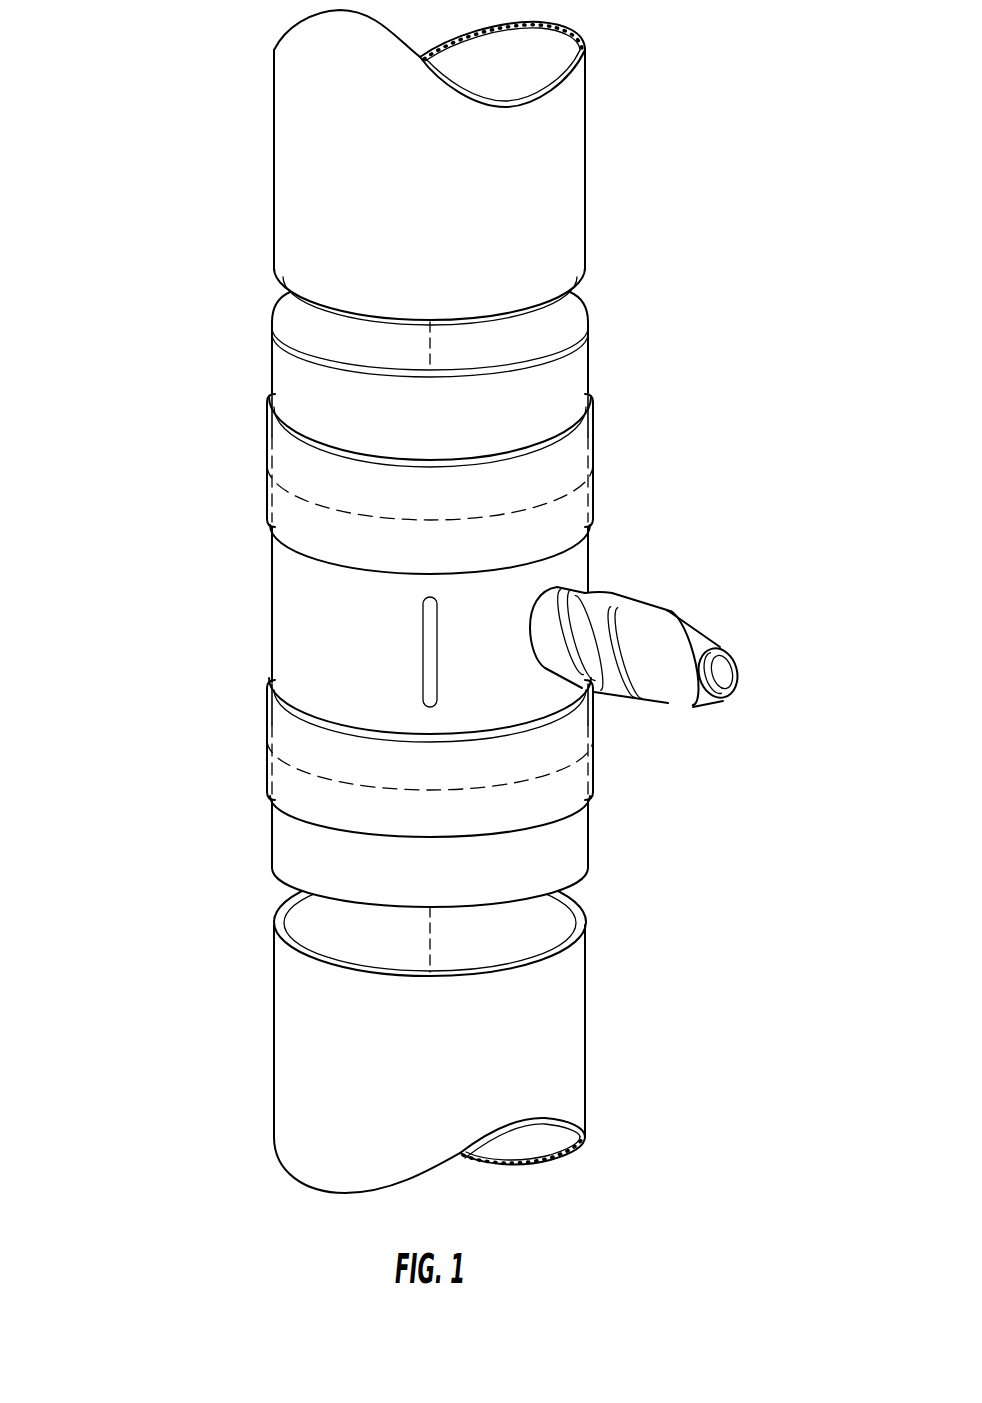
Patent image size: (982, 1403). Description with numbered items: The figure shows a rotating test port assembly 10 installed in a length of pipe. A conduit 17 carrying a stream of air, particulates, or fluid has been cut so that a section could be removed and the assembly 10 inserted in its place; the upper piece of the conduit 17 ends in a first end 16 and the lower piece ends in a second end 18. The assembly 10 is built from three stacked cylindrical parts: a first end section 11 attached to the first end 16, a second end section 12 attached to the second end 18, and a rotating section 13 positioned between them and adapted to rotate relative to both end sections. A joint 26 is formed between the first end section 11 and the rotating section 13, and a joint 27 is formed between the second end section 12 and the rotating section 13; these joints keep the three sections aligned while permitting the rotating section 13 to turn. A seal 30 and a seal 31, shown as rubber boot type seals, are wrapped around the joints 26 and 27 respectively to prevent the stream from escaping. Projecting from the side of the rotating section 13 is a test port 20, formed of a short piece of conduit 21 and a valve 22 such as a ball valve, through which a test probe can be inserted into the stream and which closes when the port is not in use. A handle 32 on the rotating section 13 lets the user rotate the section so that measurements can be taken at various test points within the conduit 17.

The rotating test port assembly 10 is at (439, 562).
The first end section 11 is at (297, 390).
The second end section 12 is at (300, 843).
The rotating section 13 is at (300, 612).
The first end of conduit 16 is at (517, 308).
The conduit 17 is at (594, 135).
The second end of conduit 18 is at (578, 928).
The test port 20 is at (656, 600).
The short piece of conduit 21 is at (560, 607).
The valve 22 is at (620, 620).
The joint 26 is at (592, 465).
The joint 27 is at (267, 740).
The seal 30 is at (570, 440).
The seal 31 is at (590, 790).
The handle 32 is at (423, 661).